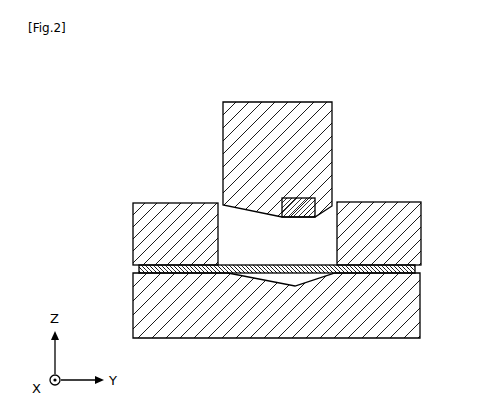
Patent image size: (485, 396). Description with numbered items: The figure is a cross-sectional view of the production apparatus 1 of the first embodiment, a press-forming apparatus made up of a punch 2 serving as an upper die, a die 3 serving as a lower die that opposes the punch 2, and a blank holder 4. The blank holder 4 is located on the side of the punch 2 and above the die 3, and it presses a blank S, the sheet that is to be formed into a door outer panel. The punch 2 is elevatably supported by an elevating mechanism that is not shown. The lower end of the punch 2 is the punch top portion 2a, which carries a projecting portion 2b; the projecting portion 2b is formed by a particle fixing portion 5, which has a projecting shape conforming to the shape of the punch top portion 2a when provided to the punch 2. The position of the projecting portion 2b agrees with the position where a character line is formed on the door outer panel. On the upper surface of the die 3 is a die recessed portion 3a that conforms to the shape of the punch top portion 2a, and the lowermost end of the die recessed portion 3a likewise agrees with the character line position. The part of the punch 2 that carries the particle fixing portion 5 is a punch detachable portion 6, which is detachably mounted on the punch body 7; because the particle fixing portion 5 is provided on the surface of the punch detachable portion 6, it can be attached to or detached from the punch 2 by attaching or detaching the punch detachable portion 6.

The production apparatus 1 is at (143, 105).
The punch 2 is at (338, 138).
The punch top portion 2a is at (274, 222).
The projecting portion 2b is at (304, 222).
The die 3 is at (254, 341).
The die recessed portion 3a is at (303, 285).
The blank holder 4 is at (147, 237).
The particle fixing portion 5 is at (296, 219).
The punch detachable portion 6 is at (298, 198).
The punch body 7 is at (310, 122).
The blank S is at (217, 274).